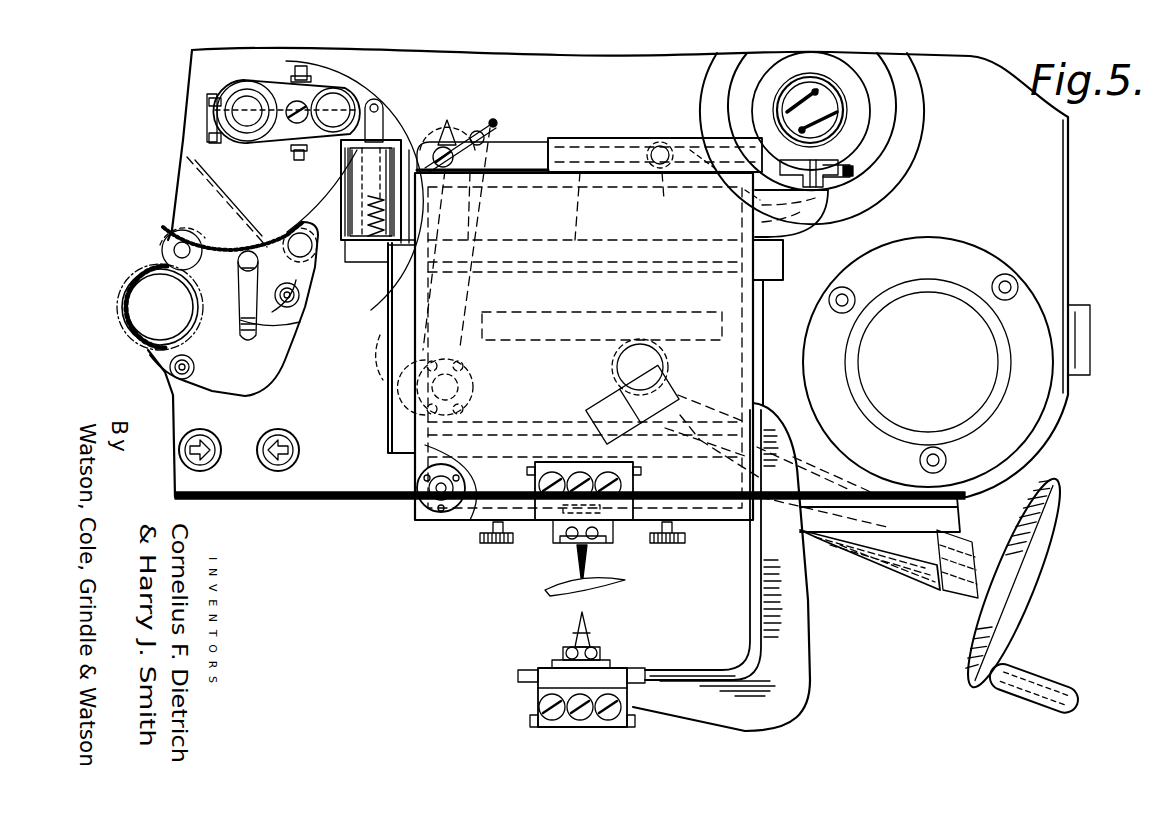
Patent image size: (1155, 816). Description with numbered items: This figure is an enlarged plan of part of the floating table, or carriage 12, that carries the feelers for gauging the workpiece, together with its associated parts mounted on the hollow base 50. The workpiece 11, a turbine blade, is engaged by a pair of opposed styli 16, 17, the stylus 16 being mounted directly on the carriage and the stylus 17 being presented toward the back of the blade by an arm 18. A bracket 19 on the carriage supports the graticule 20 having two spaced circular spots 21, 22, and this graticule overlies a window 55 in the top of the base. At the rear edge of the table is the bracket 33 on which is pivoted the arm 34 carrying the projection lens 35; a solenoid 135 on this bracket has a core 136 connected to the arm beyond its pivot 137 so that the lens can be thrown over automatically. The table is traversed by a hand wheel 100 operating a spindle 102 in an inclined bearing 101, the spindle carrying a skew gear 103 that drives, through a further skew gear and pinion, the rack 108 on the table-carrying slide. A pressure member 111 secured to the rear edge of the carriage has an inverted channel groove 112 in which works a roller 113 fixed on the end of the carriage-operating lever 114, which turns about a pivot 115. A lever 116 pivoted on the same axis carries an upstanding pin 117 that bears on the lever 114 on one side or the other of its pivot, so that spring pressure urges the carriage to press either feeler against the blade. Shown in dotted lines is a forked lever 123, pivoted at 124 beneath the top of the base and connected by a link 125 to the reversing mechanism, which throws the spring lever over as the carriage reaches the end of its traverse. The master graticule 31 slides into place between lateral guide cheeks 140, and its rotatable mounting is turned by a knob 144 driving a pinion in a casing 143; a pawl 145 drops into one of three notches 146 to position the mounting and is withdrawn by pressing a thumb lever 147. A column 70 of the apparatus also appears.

The workpiece 11 is at (560, 593).
The carriage 12 is at (467, 515).
The stylus 16 is at (585, 578).
The stylus 17 is at (584, 613).
The arm 18 is at (797, 627).
The bracket 19 is at (792, 220).
The graticule 20 is at (865, 83).
The circular spot 21 is at (817, 98).
The circular spot 22 is at (812, 128).
The master graticule 31 is at (198, 138).
The bracket 33 is at (340, 170).
The arm 34 is at (335, 105).
The projection lens 35 is at (316, 110).
The base 50 is at (1070, 188).
The window 55 is at (880, 116).
The column 70 is at (993, 410).
The hand wheel 100 is at (1035, 562).
The inclined bearing 101 is at (857, 552).
The spindle 102 is at (648, 440).
The skew gear 103 is at (663, 376).
The rack 108 is at (566, 340).
The pressure member 111 is at (637, 147).
The groove 112 is at (580, 174).
The roller 113 is at (662, 168).
The carriage-operating lever 114 is at (533, 158).
The pivot 115 is at (482, 133).
The lever 116 is at (497, 122).
The pin 117 is at (556, 128).
The forked lever 123 is at (403, 345).
The pivot 124 is at (415, 390).
The link 125 is at (476, 538).
The solenoid 135 is at (298, 296).
The core 136 is at (455, 125).
The pivot 137 is at (303, 58).
The guide cheeks 140 is at (188, 203).
The casing 143 is at (248, 383).
The knob 144 is at (177, 323).
The pawl 145 is at (260, 264).
The notches 146 is at (293, 231).
The thumb lever 147 is at (270, 325).